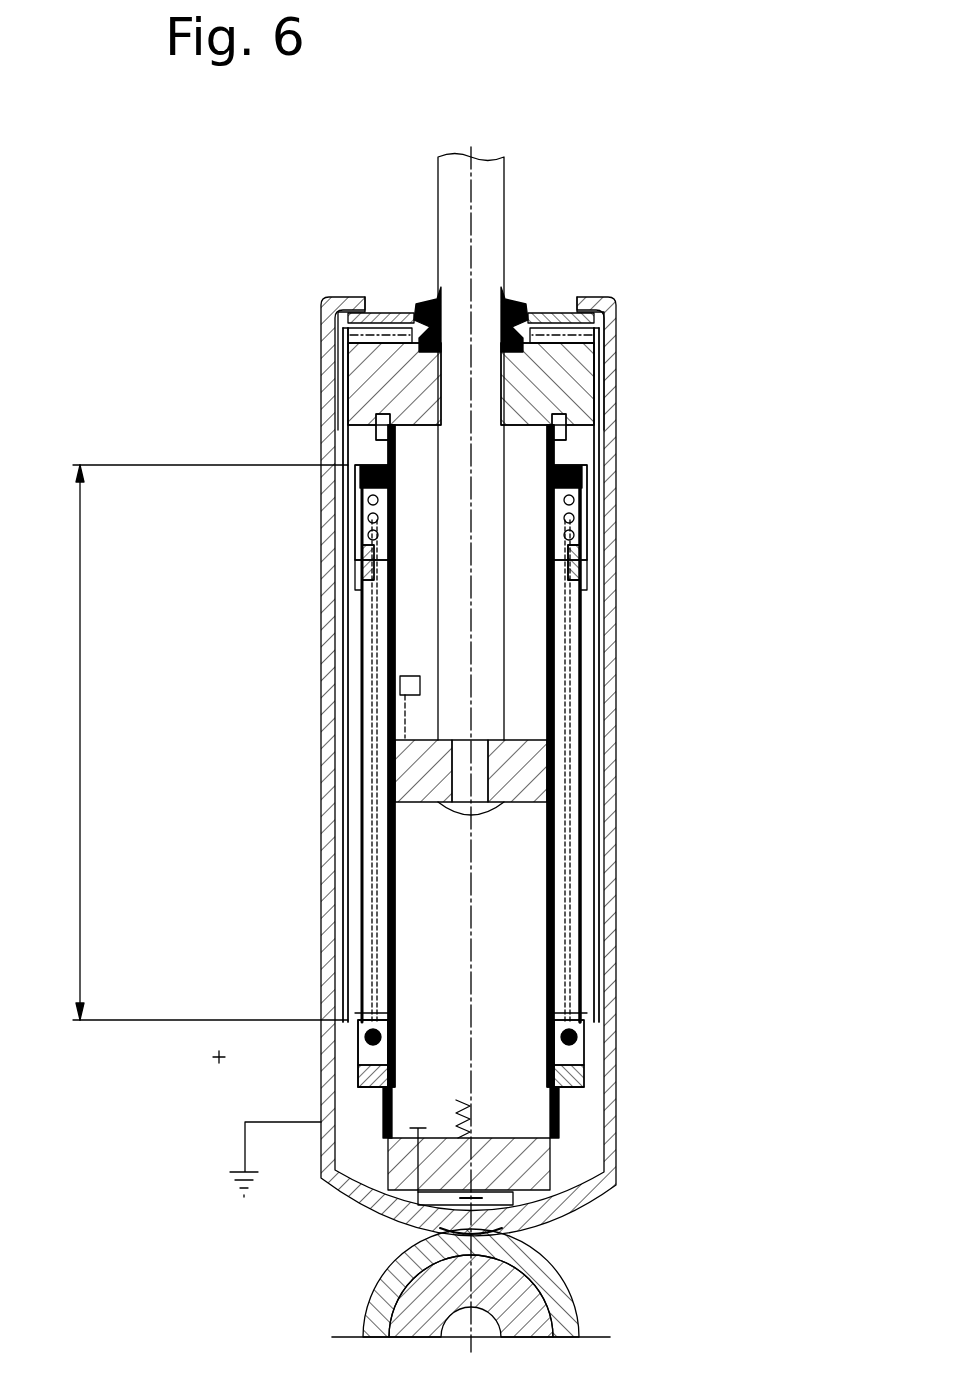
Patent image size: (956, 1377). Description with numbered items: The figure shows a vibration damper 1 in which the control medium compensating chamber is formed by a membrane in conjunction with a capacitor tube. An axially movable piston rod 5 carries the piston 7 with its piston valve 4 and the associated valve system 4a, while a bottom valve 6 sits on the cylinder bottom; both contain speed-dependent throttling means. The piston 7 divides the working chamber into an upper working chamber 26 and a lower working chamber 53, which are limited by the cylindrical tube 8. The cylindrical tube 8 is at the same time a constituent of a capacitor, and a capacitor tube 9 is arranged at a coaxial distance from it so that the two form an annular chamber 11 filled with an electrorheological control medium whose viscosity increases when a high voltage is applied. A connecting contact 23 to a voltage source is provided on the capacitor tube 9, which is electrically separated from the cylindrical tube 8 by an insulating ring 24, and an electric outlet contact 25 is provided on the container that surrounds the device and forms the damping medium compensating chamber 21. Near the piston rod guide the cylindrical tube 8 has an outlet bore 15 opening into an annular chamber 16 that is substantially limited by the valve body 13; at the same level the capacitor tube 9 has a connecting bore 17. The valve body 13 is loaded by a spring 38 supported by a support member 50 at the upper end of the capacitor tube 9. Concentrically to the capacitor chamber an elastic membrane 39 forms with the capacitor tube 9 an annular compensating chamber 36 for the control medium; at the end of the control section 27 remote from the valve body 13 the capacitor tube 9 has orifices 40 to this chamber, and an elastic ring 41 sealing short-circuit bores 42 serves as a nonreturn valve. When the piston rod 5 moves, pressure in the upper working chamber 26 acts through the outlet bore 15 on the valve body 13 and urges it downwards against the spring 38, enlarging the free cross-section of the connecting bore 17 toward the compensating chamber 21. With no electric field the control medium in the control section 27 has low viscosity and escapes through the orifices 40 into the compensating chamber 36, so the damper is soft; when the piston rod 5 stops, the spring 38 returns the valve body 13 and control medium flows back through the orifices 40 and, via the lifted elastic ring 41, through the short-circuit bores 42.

The vibration damper 1 is at (186, 1262).
The piston valve 4 is at (405, 762).
The valve system 4a is at (398, 684).
The piston rod 5 is at (485, 180).
The bottom valve 6 is at (525, 1166).
The piston 7 is at (525, 760).
The cylindrical tube 8 is at (392, 860).
The capacitor tube 9 is at (360, 862).
The annular chamber 11 is at (555, 857).
The valve body 13 is at (583, 457).
The outlet bore 15 is at (551, 432).
The annular chamber 16 is at (558, 437).
The connecting bore 17 is at (345, 424).
The damping medium compensating chamber 21 is at (577, 1110).
The connecting contact 23 is at (360, 1057).
The insulating ring 24 is at (575, 1063).
The electric outlet contact 25 is at (275, 1141).
The upper working chamber 26 is at (410, 518).
The control section 27 is at (80, 722).
The control medium compensating chamber 36 is at (572, 663).
The spring 38 is at (573, 503).
The elastic membrane 39 is at (592, 805).
The orifices 40 is at (360, 1010).
The elastic ring 41 is at (560, 573).
The short-circuit bores 42 is at (340, 570).
The support member 50 is at (597, 542).
The lower working chamber 53 is at (525, 920).